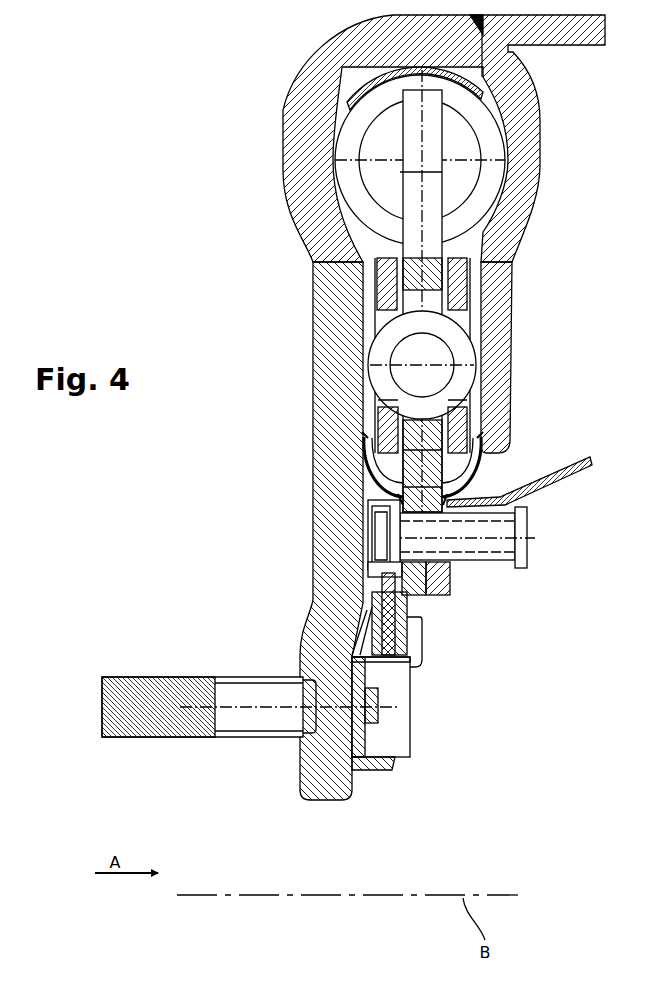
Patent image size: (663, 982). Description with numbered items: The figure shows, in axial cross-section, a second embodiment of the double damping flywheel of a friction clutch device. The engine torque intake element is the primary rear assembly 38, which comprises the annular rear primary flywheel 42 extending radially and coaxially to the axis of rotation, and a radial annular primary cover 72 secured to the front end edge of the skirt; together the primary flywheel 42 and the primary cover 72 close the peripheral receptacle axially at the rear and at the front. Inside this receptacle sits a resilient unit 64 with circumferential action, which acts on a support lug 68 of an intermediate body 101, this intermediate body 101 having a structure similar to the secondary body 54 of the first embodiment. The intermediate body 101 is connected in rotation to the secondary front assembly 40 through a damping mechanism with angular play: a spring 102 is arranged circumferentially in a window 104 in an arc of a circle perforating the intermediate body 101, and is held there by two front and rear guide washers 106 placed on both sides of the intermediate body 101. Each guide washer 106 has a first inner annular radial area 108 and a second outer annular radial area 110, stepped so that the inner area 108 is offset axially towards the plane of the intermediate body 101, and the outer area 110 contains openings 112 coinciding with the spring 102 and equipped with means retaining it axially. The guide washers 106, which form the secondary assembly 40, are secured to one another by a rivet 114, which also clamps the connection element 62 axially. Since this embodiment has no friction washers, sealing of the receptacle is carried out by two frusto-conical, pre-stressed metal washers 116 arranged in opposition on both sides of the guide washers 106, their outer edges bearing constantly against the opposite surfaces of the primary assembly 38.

The primary rear assembly 38 is at (268, 116).
The secondary front assembly 40 is at (488, 322).
The primary flywheel 42 is at (330, 470).
The secondary body 54 is at (428, 248).
The connection element 62 is at (576, 470).
The resilient unit 64 is at (348, 182).
The support lug 68 is at (430, 173).
The primary cover 72 is at (505, 290).
The intermediate body 101 is at (372, 450).
The spring 102 is at (462, 378).
The window 104 is at (397, 318).
The guide washer 106 is at (376, 422).
The inner annular radial area 108 is at (450, 490).
The outer annular radial area 110 is at (377, 266).
The opening 112 is at (385, 398).
The rivet 114 is at (485, 547).
The metal washer 116 is at (472, 466).